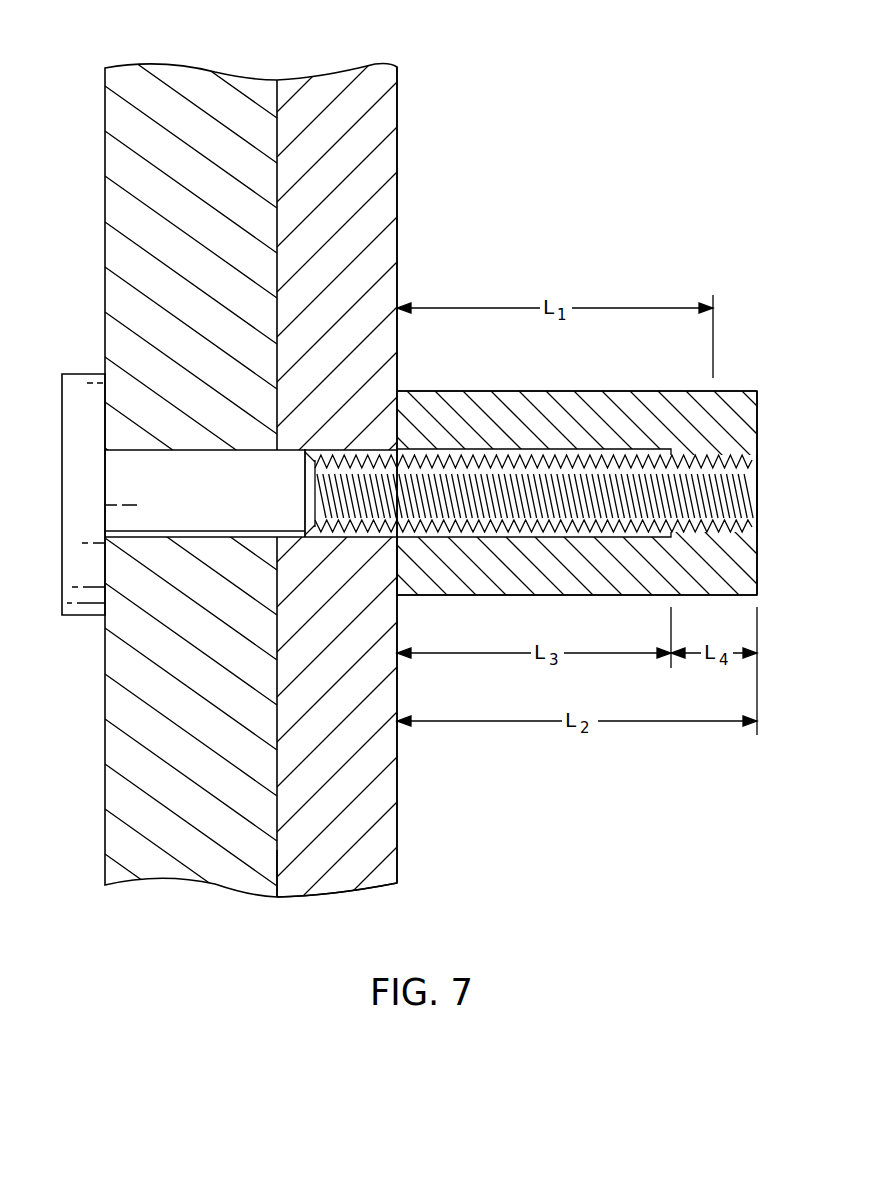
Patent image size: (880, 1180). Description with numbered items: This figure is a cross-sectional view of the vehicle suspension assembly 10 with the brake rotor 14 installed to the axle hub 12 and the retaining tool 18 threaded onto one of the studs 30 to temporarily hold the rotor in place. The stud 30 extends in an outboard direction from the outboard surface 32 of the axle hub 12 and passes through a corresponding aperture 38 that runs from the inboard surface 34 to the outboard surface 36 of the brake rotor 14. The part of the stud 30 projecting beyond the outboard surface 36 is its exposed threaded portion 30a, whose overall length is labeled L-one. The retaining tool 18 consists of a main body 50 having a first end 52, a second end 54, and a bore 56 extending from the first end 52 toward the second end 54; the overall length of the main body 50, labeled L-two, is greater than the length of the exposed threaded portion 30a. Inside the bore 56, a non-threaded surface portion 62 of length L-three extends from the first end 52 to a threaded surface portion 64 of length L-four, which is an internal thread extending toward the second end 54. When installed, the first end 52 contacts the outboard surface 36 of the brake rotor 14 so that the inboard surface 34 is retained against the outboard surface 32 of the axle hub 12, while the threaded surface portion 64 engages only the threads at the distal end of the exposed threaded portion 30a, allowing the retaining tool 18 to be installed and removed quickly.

The vehicle suspension assembly 10 is at (378, 57).
The axle hub 12 is at (205, 115).
The brake rotor 14 is at (350, 190).
The retaining tool 18 is at (734, 384).
The stud 30 is at (137, 480).
The exposed threaded portion 30a is at (695, 460).
The outboard surface of the axle hub 32 is at (277, 813).
The inboard surface of the brake rotor 34 is at (277, 852).
The outboard surface of the brake rotor 36 is at (397, 822).
The aperture 38 is at (407, 450).
The main body 50 is at (617, 391).
The first end 52 is at (397, 566).
The second end 54 is at (757, 562).
The bore 56 is at (508, 453).
The non-threaded surface portion 62 is at (533, 532).
The threaded surface portion 64 is at (735, 512).